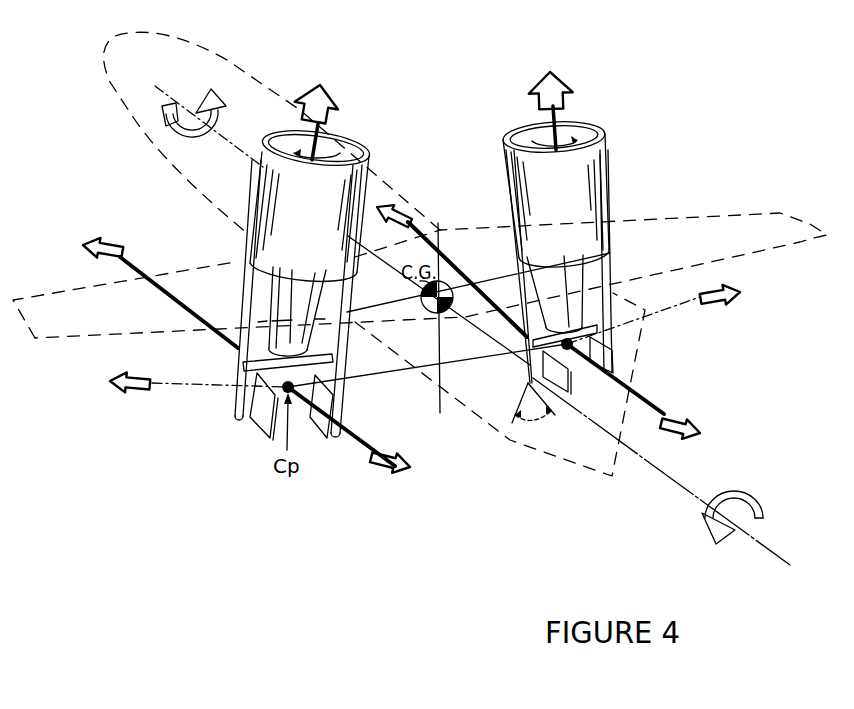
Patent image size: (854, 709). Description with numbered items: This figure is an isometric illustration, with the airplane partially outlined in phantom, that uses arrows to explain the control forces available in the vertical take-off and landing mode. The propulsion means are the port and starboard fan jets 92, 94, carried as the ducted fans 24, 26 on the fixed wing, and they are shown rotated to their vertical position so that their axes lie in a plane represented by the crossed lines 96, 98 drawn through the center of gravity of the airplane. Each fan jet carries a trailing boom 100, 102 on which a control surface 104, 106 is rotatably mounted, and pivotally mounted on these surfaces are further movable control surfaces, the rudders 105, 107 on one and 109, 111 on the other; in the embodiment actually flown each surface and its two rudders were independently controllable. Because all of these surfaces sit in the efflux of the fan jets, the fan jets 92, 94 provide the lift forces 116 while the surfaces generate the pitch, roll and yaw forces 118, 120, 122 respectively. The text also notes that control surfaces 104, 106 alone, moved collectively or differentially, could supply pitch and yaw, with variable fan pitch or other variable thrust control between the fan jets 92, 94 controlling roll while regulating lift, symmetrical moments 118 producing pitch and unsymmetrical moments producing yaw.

The ducted fan 24 is at (322, 225).
The ducted fan 26 is at (576, 225).
The port fan jet 92 is at (275, 297).
The starboard fan jet 94 is at (578, 270).
The crossed line 96 is at (438, 401).
The crossed line 98 is at (392, 287).
The trailing boom 100 is at (253, 299).
The trailing boom 102 is at (343, 338).
The control surface 104 is at (252, 418).
The movable control surface (rudder) 105 is at (612, 366).
The control surface 106 is at (515, 405).
The movable control surface (rudder) 107 is at (560, 395).
The movable control surface (rudder) 109 is at (318, 432).
The movable control surface (rudder) 111 is at (262, 430).
The lift force 116 is at (327, 96).
The pitch force 118 is at (100, 241).
The roll force 120 is at (166, 112).
The yaw force 122 is at (134, 378).